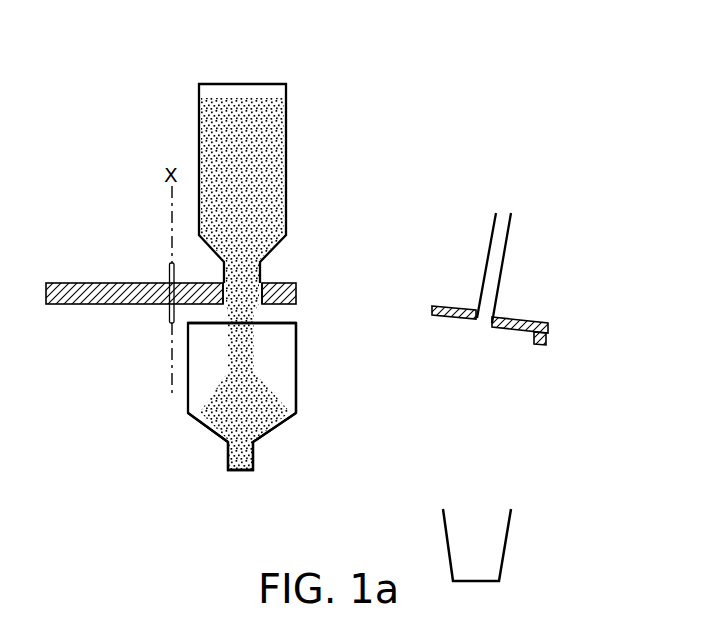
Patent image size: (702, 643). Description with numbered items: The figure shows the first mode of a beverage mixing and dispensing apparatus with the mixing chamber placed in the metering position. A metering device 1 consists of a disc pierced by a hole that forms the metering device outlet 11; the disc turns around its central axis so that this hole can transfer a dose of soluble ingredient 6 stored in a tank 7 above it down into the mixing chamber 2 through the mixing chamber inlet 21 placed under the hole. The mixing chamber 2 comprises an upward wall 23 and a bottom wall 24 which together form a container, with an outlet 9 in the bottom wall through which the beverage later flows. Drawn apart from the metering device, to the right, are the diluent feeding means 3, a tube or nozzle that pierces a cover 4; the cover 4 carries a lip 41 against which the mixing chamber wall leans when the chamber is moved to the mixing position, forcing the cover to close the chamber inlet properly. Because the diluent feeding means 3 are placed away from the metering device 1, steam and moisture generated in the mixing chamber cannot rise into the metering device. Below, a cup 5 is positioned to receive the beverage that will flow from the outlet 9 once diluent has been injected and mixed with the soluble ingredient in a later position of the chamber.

The metering device 1 is at (58, 283).
The mixing chamber 2 is at (186, 403).
The diluent feeding means 3 is at (511, 230).
The cover 4 is at (537, 316).
The lip 41 is at (548, 340).
The cup 5 is at (512, 530).
The soluble ingredient 6 is at (272, 163).
The tank 7 is at (288, 90).
The outlet 9 is at (228, 456).
The metering device outlet 11 is at (250, 293).
The mixing chamber inlet 21 is at (255, 326).
The upward wall 23 is at (296, 392).
The bottom wall 24 is at (273, 428).